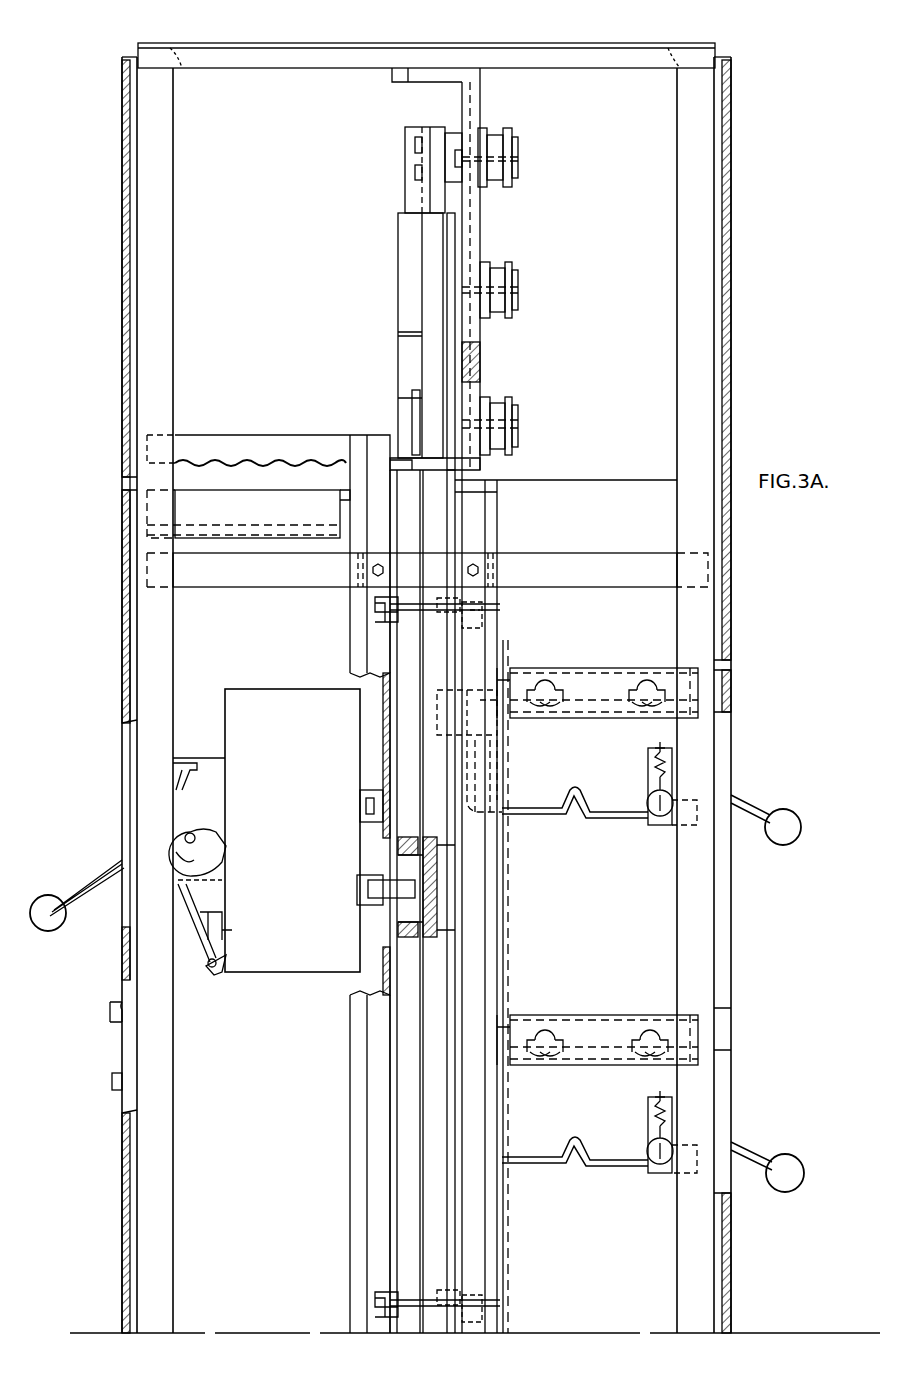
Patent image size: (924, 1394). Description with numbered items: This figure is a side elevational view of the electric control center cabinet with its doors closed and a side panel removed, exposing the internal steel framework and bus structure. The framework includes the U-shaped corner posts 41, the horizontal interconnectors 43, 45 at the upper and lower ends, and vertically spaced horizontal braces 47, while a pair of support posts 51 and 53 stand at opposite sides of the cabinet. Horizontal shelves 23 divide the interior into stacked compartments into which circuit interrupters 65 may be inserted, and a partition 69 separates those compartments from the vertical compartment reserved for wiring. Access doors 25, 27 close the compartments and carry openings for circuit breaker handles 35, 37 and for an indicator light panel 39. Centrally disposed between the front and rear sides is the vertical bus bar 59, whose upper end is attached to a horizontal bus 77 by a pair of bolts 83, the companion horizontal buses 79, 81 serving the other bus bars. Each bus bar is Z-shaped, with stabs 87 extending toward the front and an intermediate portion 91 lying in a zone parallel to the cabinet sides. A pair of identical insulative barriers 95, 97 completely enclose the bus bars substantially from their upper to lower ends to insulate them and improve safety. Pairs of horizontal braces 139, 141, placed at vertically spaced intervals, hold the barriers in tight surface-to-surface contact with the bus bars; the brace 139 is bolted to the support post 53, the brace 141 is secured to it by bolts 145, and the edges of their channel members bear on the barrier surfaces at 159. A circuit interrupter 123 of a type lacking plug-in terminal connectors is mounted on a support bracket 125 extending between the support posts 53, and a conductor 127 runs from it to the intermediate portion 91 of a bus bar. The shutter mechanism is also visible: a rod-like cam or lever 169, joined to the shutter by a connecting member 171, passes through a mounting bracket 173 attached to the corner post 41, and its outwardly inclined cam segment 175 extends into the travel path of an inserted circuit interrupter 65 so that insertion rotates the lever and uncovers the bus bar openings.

The horizontal shelf 23 is at (298, 530).
The access door 25 is at (130, 292).
The access door 27 is at (122, 680).
The handle 35 is at (78, 888).
The handle 37 is at (756, 803).
The indicator light panel 39 is at (122, 1038).
The corner post 41 is at (163, 335).
The horizontal interconnector 43 is at (182, 48).
The horizontal interconnector 45 is at (318, 65).
The horizontal brace 47 is at (240, 575).
The support post 51 is at (492, 1216).
The support post 53 is at (364, 435).
The bus bar 59 is at (423, 700).
The circuit interrupter 65 is at (602, 908).
The partition 69 is at (302, 435).
The horizontal bus 77 is at (508, 130).
The horizontal bus 79 is at (486, 264).
The horizontal bus 81 is at (486, 398).
The bolt 83 is at (412, 170).
The stab 87 is at (405, 134).
The intermediate portion 91 is at (418, 866).
The barrier 95 is at (427, 238).
The barrier 97 is at (455, 228).
The circuit interrupter 123 is at (312, 828).
The support bracket 125 is at (372, 790).
The conductor 127 is at (382, 905).
The horizontal brace 139 is at (390, 632).
The horizontal brace 141 is at (485, 634).
The bolt 145 is at (408, 610).
The engagement location 159 is at (437, 898).
The cam or lever 169 is at (488, 790).
The connecting member 171 is at (492, 684).
The mounting bracket 173 is at (656, 826).
The cam segment 175 is at (590, 790).